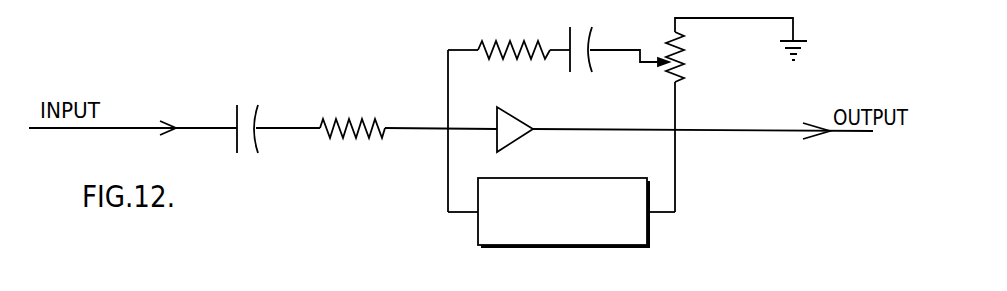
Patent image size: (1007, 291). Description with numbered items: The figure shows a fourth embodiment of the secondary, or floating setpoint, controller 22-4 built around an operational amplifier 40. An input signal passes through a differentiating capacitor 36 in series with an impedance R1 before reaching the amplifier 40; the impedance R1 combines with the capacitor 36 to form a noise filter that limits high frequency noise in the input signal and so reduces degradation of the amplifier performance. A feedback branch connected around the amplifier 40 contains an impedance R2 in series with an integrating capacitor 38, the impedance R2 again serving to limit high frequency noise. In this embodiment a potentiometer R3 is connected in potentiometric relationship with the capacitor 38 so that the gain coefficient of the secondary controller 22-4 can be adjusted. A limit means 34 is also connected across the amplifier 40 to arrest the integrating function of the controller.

The differentiating capacitor 36 is at (237, 116).
The impedance R1 is at (352, 113).
The secondary controller 22-4 is at (390, 190).
The impedance R2 is at (514, 38).
The integrating capacitor 38 is at (590, 43).
The potentiometer R3 is at (688, 57).
The operational amplifier 40 is at (518, 117).
The limit means 34 is at (578, 178).